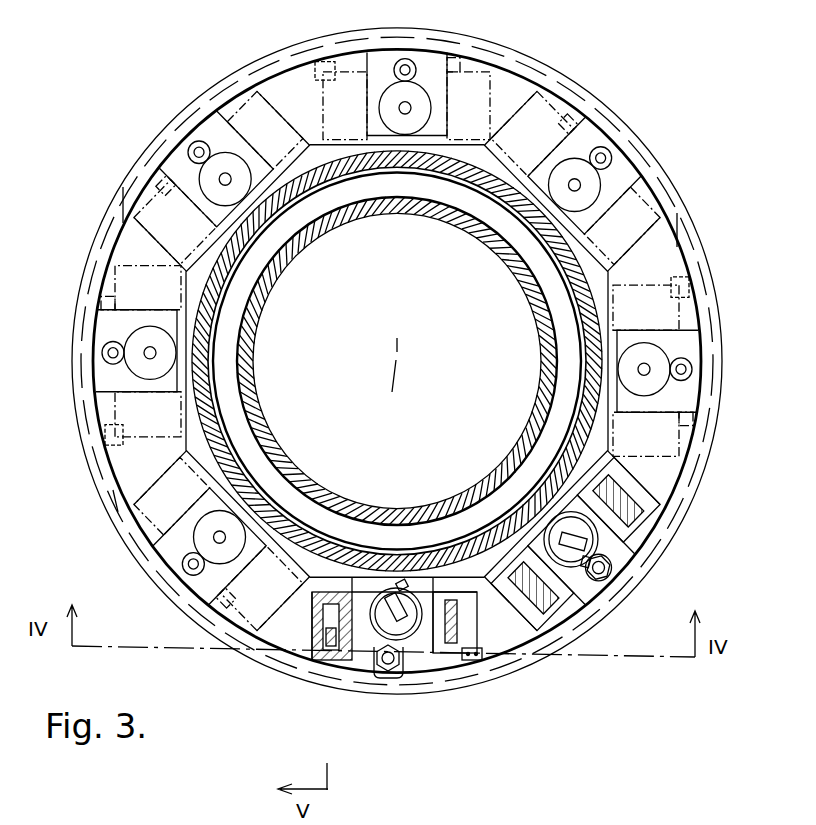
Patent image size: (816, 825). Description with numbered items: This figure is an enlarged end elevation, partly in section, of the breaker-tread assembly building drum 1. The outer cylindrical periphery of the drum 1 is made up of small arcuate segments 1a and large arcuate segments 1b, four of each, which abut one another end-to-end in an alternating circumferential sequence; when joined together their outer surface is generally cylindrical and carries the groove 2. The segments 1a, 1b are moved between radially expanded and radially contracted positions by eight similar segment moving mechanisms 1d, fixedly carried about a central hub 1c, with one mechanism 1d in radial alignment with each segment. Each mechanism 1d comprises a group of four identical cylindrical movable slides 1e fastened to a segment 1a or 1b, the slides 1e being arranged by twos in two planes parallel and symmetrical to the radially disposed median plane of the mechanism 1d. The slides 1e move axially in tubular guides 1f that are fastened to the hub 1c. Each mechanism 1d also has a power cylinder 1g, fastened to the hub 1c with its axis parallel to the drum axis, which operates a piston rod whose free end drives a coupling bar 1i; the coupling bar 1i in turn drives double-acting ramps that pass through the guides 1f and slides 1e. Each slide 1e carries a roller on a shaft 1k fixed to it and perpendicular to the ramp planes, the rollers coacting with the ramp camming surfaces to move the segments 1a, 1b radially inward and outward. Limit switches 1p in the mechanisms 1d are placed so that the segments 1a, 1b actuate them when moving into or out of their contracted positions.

The building drum 1 is at (172, 607).
The small arcuate segments 1a is at (208, 106).
The large arcuate segments 1b is at (496, 62).
The hub 1c is at (213, 432).
The segment moving mechanism 1d is at (150, 274).
The movable slides 1e is at (347, 670).
The tubular guides 1f is at (337, 595).
The power cylinder 1g is at (403, 592).
The coupling bar 1i is at (422, 637).
The shaft 1k is at (316, 640).
The limit switches 1p is at (322, 68).
The groove 2 is at (590, 104).